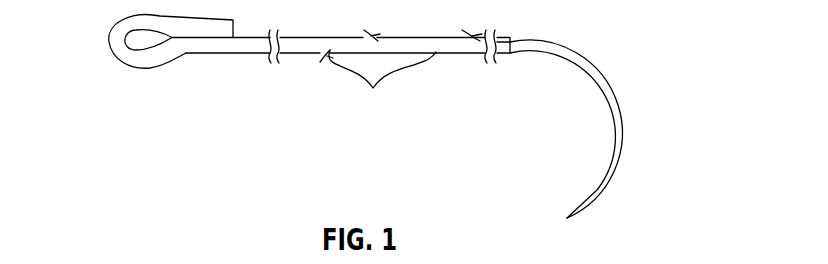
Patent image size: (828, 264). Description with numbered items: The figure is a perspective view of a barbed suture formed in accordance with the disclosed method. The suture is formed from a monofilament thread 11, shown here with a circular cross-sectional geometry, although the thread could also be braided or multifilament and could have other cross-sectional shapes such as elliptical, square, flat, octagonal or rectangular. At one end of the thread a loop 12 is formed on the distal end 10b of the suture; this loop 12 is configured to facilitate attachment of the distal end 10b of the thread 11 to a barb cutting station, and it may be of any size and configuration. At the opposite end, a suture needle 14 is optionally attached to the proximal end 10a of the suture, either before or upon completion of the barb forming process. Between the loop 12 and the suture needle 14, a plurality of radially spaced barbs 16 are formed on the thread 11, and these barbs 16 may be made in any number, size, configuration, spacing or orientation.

The proximal end 10a is at (505, 39).
The distal end 10b is at (238, 55).
The monofilament thread 11 is at (332, 38).
The loop 12 is at (125, 70).
The suture needle 14 is at (623, 104).
The barbs 16 is at (382, 81).